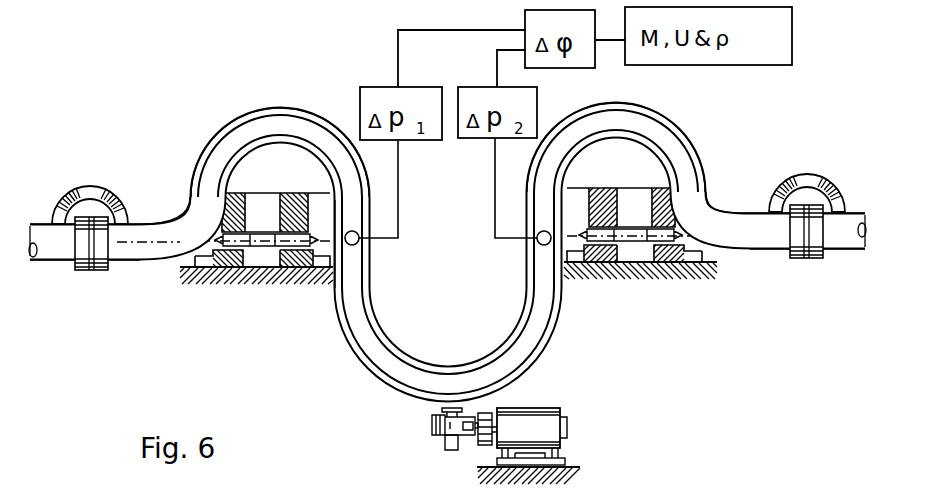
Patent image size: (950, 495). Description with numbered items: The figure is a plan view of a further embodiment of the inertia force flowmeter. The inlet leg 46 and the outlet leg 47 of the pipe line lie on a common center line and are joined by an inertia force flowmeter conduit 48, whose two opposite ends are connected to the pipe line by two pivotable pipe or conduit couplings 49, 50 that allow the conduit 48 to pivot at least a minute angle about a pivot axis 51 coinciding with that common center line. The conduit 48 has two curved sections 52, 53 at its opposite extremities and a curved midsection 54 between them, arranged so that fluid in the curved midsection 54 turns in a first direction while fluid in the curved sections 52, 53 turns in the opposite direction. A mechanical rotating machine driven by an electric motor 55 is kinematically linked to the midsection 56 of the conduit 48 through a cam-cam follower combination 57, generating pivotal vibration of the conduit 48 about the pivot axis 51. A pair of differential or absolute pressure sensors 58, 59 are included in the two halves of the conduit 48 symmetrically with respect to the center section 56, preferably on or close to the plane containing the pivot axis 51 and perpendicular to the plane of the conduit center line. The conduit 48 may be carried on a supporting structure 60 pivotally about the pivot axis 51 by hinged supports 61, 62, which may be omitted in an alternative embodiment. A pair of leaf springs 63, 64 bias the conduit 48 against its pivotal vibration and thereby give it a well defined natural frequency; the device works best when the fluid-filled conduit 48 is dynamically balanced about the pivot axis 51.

The inlet leg 46 is at (55, 253).
The outlet leg 47 is at (843, 240).
The inertia force flowmeter conduit 48 is at (560, 340).
The pivotable pipe coupling 49 is at (93, 273).
The pivotable pipe coupling 50 is at (805, 262).
The pivot axis 51 is at (152, 240).
The curved section 52 is at (236, 147).
The curved section 53 is at (668, 138).
The curved midsection 54 is at (366, 372).
The electric motor 55 is at (535, 405).
The midsection of the conduit 56 is at (448, 388).
The cam-cam follower combination 57 is at (470, 441).
The pressure sensor 58 is at (355, 250).
The pressure sensor 59 is at (542, 250).
The support 60 is at (212, 283).
The hinged support 61 is at (255, 247).
The hinged support 62 is at (641, 241).
The leaf spring 63 is at (82, 187).
The leaf spring 64 is at (818, 177).